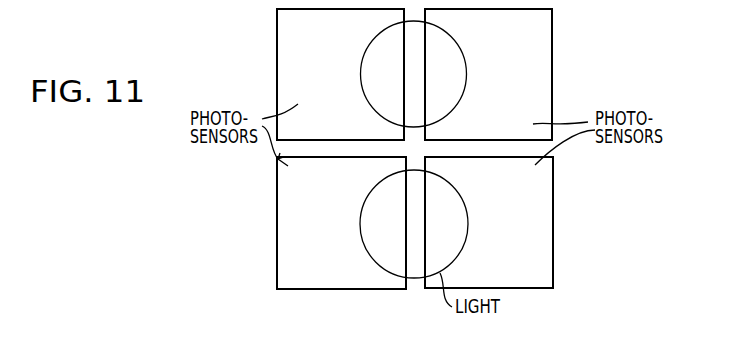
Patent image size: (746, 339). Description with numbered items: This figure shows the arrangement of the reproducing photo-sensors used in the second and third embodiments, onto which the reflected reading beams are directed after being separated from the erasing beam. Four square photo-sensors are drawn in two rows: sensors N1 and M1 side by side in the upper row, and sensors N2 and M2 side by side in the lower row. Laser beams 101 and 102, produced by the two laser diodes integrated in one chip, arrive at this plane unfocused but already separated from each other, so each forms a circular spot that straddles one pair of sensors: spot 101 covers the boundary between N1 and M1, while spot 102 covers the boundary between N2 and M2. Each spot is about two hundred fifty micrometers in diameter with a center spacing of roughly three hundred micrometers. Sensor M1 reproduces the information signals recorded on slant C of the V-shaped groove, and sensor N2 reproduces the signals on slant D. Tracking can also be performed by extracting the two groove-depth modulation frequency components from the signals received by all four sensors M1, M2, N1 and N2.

The laser beam 101 is at (453, 42).
The laser beam 102 is at (465, 196).
The sensor N1 is at (277, 40).
The sensor M1 is at (553, 38).
The sensor N2 is at (277, 195).
The sensor M2 is at (555, 194).